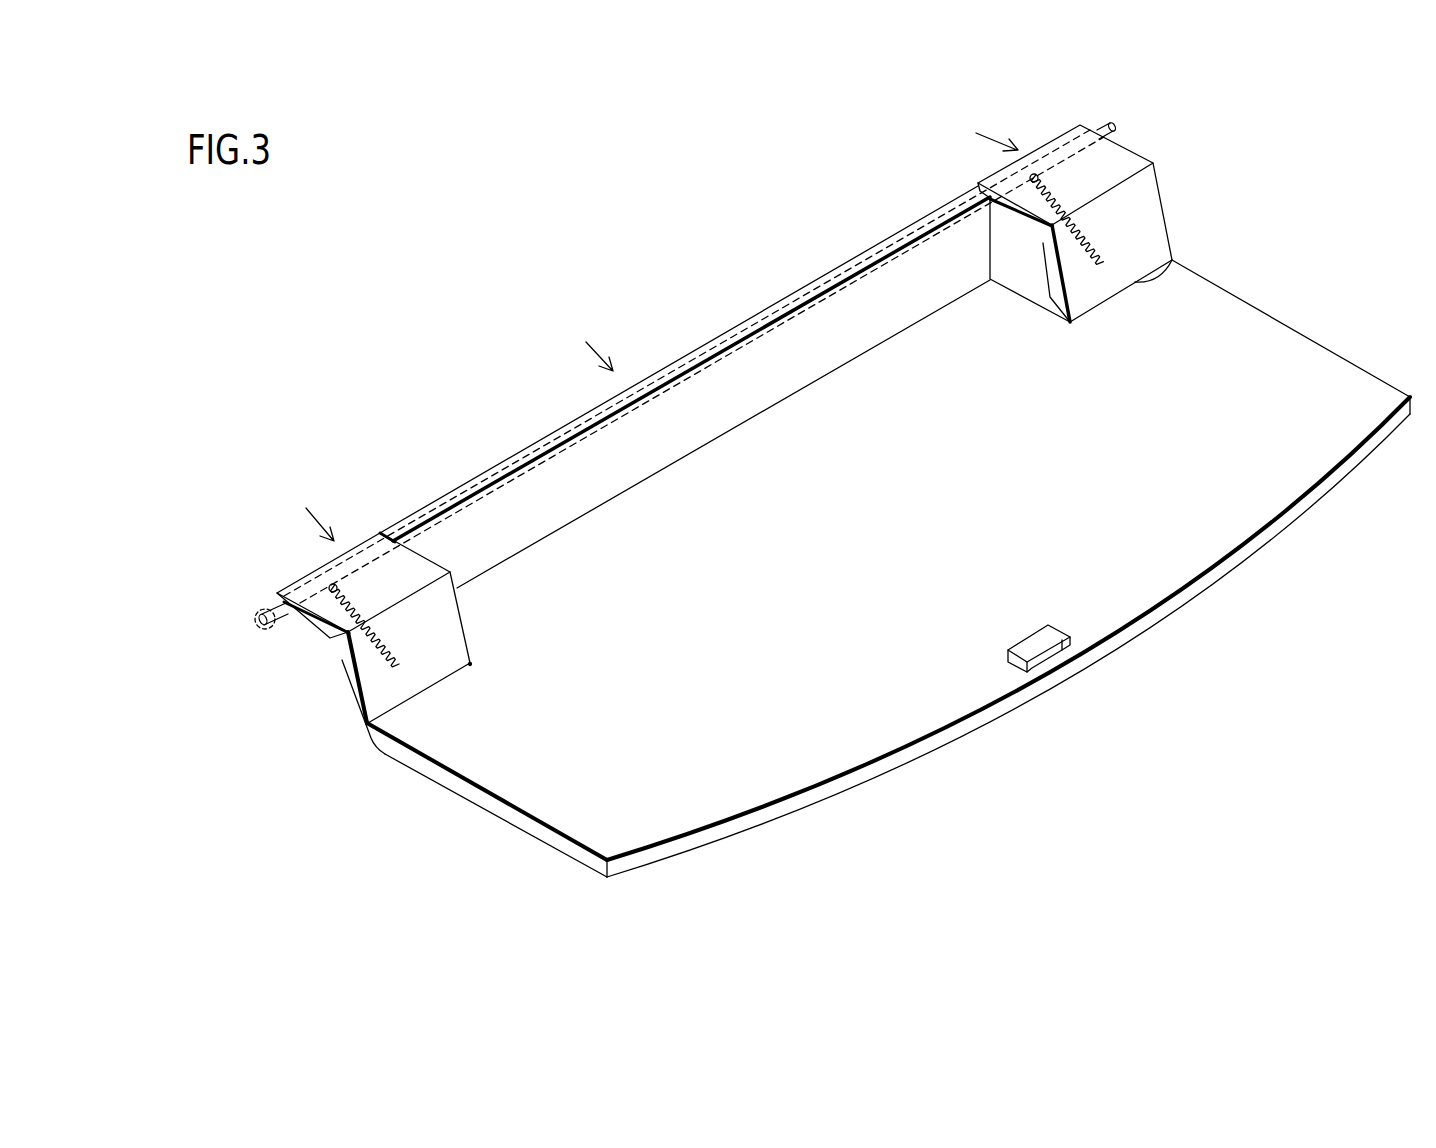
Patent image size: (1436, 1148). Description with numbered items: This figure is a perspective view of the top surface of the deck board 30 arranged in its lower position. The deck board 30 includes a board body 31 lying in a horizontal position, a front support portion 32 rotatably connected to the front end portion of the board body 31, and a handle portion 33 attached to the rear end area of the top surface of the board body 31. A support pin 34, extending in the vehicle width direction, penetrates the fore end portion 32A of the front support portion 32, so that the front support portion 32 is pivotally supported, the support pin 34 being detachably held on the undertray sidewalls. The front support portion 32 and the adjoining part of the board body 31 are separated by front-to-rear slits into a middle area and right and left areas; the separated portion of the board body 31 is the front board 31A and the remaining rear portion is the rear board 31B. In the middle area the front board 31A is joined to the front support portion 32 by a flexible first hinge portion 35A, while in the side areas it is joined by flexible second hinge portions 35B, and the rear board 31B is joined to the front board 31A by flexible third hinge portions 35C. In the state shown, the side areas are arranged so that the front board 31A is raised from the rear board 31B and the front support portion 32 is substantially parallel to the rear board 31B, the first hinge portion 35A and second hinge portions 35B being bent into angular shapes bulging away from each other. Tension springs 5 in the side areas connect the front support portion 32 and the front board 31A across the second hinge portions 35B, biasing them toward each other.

The deck board 30 is at (722, 203).
The board body 31 is at (924, 705).
The front board 31A is at (368, 682).
The rear board 31B is at (553, 776).
The front support portion 32 is at (547, 487).
The fore end portion 32A is at (803, 288).
The handle portion 33 is at (1033, 642).
The support pin 34 is at (263, 633).
The first hinge portion 35A is at (705, 443).
The second hinge portion 35B is at (412, 595).
The third hinge portion 35C is at (1135, 282).
The tension spring 5 is at (335, 623).